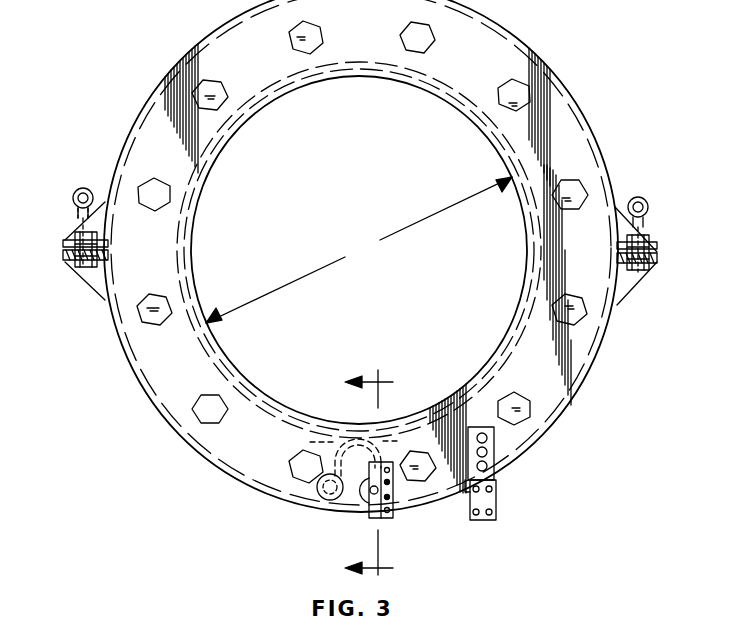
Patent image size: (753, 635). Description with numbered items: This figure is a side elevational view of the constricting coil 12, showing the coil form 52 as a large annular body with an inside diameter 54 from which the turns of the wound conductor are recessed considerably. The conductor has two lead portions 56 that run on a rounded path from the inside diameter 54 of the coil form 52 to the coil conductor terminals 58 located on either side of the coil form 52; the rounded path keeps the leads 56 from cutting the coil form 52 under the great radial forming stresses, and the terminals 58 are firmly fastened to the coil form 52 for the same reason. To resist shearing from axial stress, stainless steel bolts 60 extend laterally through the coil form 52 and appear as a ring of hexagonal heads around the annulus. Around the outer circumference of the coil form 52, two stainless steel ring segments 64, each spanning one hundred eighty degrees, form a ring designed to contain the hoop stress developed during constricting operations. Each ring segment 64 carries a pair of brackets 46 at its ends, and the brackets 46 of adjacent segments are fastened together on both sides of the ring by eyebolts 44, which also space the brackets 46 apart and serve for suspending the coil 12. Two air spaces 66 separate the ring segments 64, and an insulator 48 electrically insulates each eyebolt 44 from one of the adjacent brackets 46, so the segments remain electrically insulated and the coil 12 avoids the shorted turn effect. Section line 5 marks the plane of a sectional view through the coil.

The constricting coil 12 is at (498, 50).
The eyebolts 44 is at (75, 196).
The brackets 46 is at (65, 257).
The insulator 48 is at (67, 262).
The coil form 52 is at (163, 363).
The inside diameter 54 is at (359, 250).
The lead portions 56 is at (355, 452).
The coil conductor terminals 58 is at (320, 495).
The stainless steel bolts 60 is at (407, 35).
The ring segments 64 is at (568, 97).
The air spaces 66 is at (100, 252).
The section line 5- 5 is at (358, 475).